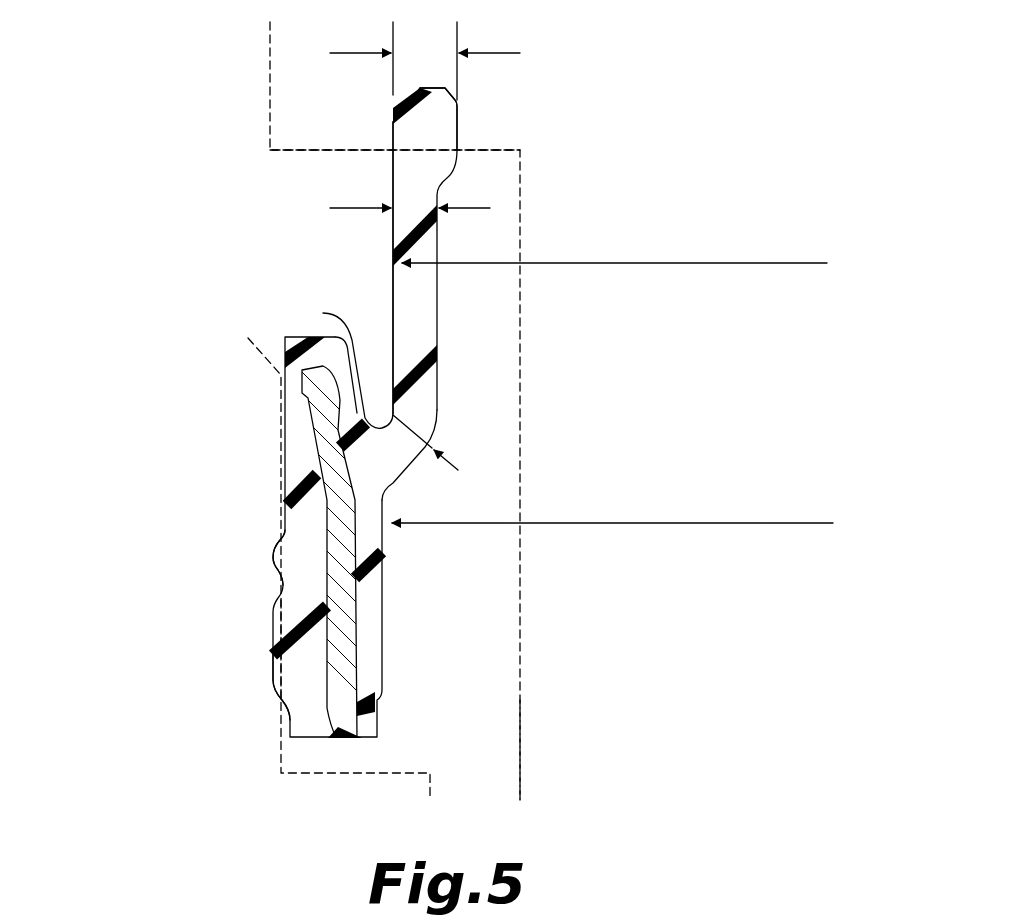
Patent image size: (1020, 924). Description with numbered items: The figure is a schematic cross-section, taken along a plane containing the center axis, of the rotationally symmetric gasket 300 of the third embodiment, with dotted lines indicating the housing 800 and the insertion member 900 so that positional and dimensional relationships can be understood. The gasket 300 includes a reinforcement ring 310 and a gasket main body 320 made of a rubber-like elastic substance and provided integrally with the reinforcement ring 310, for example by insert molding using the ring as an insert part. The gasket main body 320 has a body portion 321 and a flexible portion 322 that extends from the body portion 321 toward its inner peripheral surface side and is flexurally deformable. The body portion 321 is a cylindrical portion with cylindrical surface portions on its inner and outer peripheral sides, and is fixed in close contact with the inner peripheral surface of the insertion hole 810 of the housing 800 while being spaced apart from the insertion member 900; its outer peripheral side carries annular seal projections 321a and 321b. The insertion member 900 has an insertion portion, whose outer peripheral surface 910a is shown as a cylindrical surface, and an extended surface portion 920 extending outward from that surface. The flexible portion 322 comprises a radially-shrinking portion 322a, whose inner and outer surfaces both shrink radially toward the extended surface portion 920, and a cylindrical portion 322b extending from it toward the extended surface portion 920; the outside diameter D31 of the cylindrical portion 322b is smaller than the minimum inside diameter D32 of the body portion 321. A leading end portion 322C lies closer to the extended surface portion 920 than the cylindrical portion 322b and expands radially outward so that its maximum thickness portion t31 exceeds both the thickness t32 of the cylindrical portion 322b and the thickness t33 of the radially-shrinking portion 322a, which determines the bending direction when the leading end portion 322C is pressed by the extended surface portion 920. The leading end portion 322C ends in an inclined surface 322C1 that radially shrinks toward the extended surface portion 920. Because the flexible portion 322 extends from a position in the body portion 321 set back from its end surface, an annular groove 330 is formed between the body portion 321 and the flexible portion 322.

The gasket 300 is at (403, 400).
The reinforcement ring 310 is at (338, 642).
The gasket main body 320 is at (403, 400).
The body portion 321 is at (442, 537).
The annular seal projection 321a is at (270, 557).
The annular seal projection 321b is at (270, 677).
The flexible portion 322 is at (439, 238).
The radially-shrinking portion 322a is at (397, 417).
The cylindrical portion 322b is at (403, 292).
The leading end portion 322C is at (425, 106).
The inclined surface 322C1 is at (403, 101).
The annular groove 330 is at (323, 313).
The housing 800 is at (294, 569).
The insertion hole 810 is at (270, 633).
The insertion member 900 is at (488, 411).
The outer peripheral surface 910a is at (520, 765).
The extended surface portion 920 is at (300, 157).
The maximum thickness portion t31 is at (435, 59).
The thickness of the cylindrical portion t32 is at (417, 191).
The thickness of the radially-shrinking portion t33 is at (440, 463).
The outside diameter D31 is at (656, 267).
The minimum inside diameter D32 is at (651, 524).